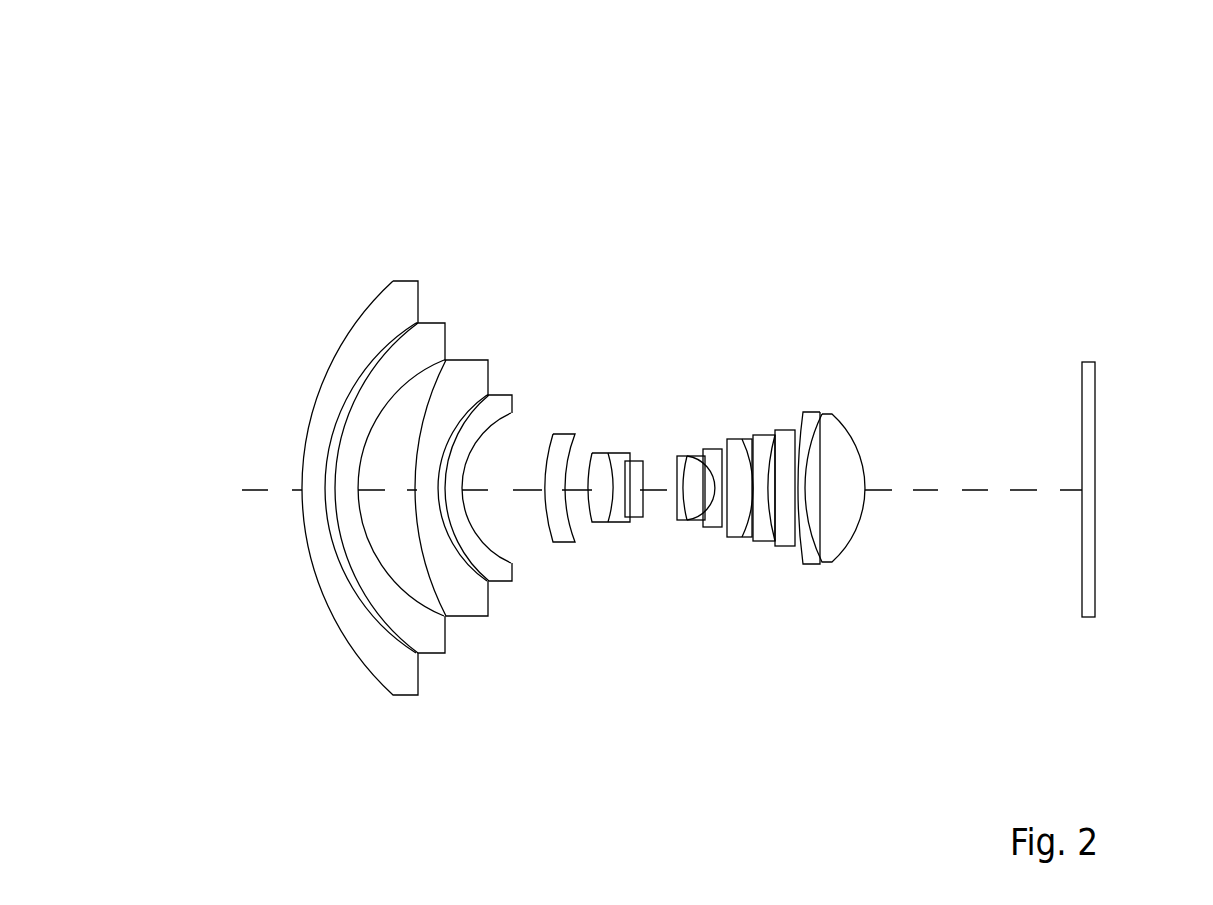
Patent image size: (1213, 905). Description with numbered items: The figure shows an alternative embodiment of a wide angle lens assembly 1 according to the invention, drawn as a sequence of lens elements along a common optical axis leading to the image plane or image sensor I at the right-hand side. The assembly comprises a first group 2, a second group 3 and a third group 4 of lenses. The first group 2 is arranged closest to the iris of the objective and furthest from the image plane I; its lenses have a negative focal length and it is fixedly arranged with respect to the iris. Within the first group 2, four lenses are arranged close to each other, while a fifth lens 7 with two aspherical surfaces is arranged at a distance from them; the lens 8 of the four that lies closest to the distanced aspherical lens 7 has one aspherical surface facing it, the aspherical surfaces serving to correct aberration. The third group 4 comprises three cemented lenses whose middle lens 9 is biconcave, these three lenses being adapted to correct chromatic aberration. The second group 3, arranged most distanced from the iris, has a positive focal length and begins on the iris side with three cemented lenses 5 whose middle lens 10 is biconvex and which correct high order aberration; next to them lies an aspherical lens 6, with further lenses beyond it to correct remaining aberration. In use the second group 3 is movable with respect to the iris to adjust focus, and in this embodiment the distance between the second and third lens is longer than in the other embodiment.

The wide angle lens assembly 1 is at (240, 313).
The first group 2 is at (585, 270).
The second group 3 is at (876, 270).
The third group 4 is at (668, 270).
The three cemented lenses 5 is at (682, 560).
The aspherical lens 6 is at (737, 520).
The fifth lens 7 is at (560, 527).
The lens 8 is at (463, 532).
The middle lens 9 is at (615, 513).
The middle lens 10 is at (695, 507).
The image plane or image sensor I is at (1135, 486).